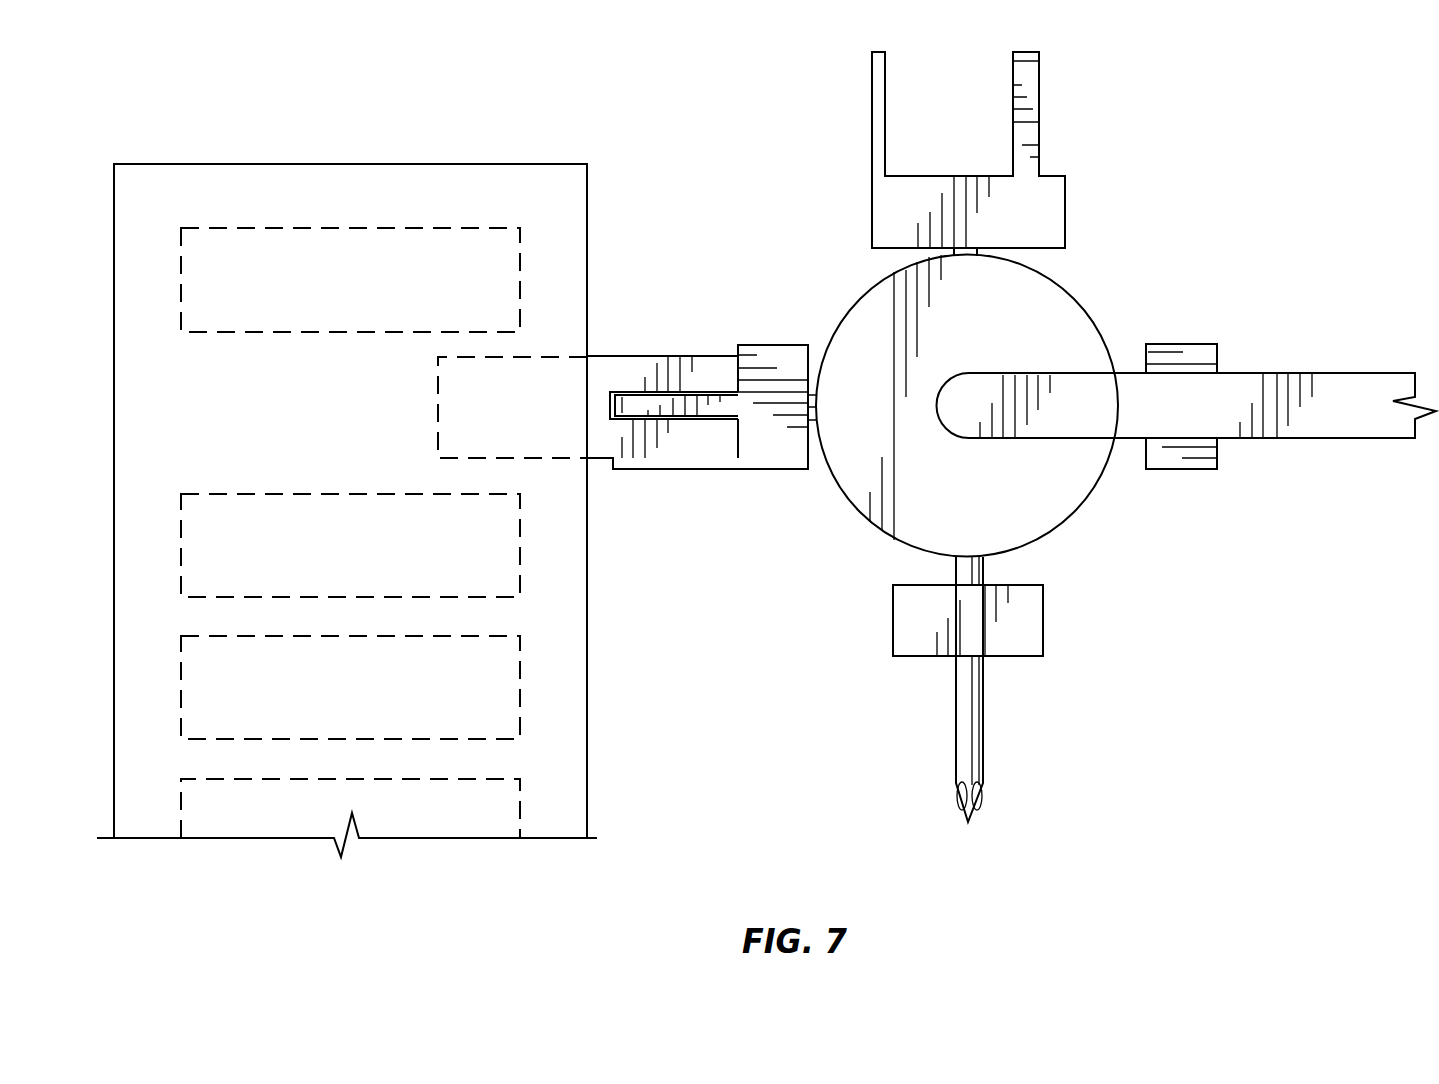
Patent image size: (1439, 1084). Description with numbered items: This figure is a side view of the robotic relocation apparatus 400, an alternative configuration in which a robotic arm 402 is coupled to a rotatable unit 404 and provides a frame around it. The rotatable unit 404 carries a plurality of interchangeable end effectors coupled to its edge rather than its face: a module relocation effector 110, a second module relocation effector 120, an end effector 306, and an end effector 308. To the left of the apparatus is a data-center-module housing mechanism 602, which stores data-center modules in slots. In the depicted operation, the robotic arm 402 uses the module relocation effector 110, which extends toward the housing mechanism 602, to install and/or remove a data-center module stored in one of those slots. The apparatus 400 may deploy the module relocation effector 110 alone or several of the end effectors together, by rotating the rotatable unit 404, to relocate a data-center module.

The data-center-module housing mechanism 602 is at (305, 170).
The module relocation effector 110 is at (688, 469).
The module relocation effector 120 is at (1063, 188).
The robotic relocation apparatus 400 is at (1058, 377).
The rotatable unit 404 is at (1090, 503).
The robotic arm 402 is at (1280, 373).
The end effector 308 is at (1217, 457).
The end effector 306 is at (1045, 637).